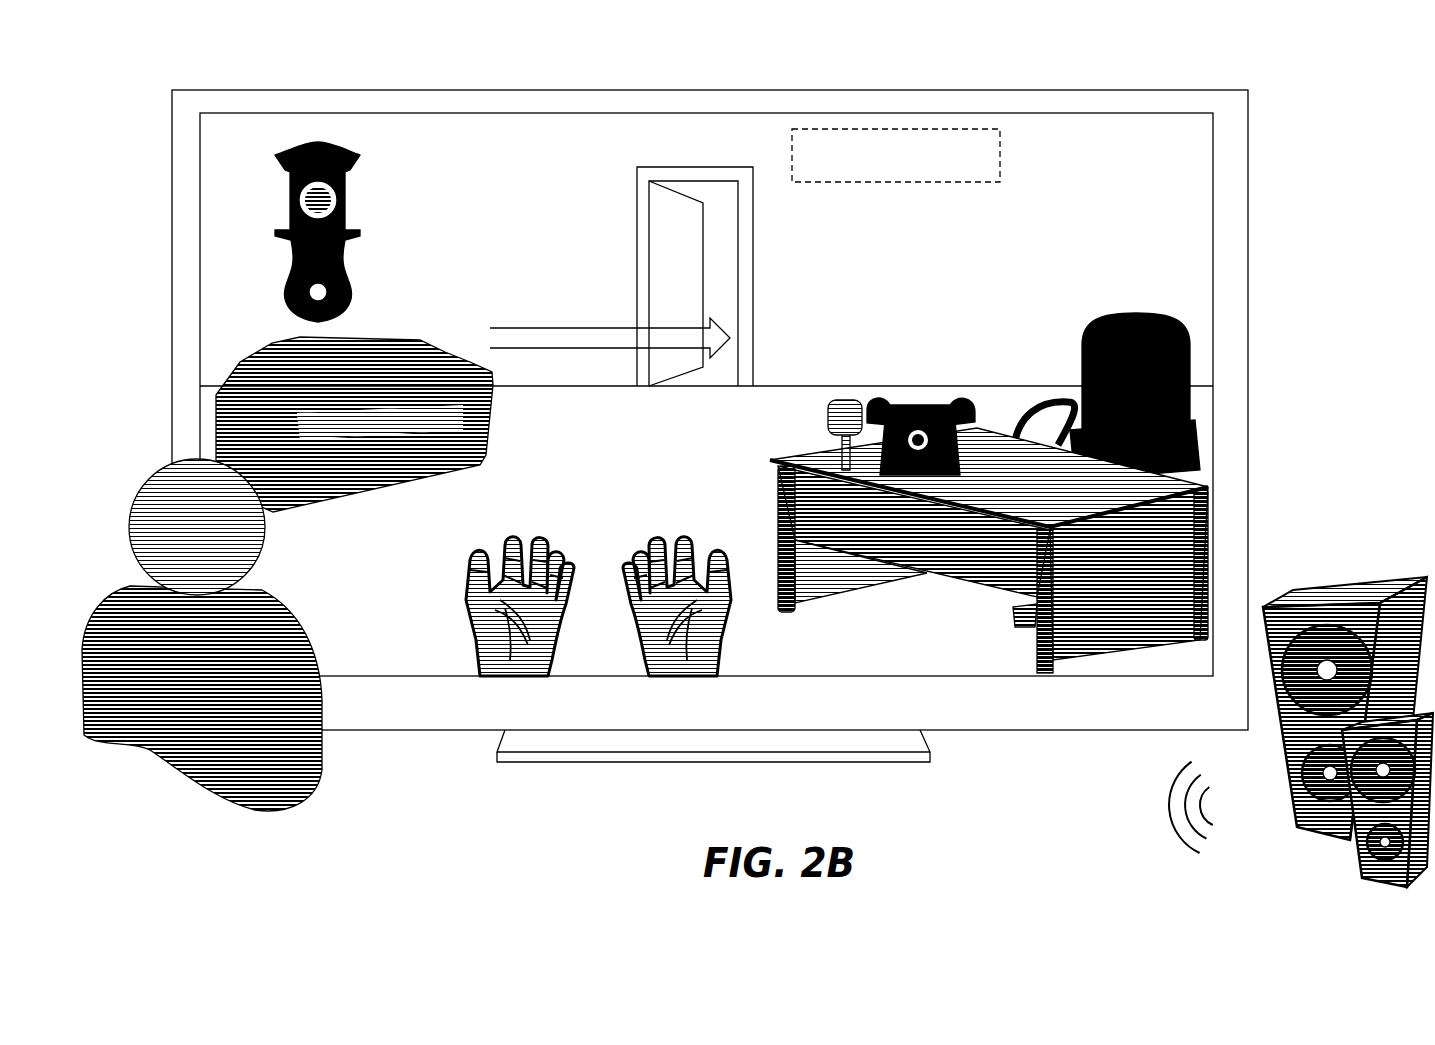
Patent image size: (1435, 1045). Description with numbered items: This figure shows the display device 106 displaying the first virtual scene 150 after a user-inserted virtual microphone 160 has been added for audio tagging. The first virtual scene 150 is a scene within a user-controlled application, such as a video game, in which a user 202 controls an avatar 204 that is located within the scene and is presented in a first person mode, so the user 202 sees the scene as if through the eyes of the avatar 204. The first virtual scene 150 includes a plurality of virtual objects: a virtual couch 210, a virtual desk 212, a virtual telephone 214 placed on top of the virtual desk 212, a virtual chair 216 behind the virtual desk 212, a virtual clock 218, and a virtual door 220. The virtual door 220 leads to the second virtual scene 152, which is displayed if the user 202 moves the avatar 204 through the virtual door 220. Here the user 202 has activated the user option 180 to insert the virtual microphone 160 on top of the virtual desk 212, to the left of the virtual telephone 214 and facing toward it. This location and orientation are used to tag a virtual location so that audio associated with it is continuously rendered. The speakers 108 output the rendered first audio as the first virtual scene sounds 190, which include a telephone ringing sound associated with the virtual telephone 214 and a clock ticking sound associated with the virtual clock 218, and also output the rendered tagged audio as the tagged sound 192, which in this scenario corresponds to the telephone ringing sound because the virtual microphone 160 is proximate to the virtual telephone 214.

The display device 106 is at (1248, 240).
The speakers 108 is at (1370, 582).
The first virtual scene 150 is at (706, 394).
The second virtual scene 152 is at (521, 326).
The virtual microphone 160 is at (830, 415).
The user option 180 is at (970, 166).
The first virtual scene sounds 190 is at (1167, 818).
The tagged sound 192 is at (1067, 807).
The user 202 is at (300, 800).
The avatar 204 is at (717, 633).
The virtual couch 210 is at (310, 503).
The virtual desk 212 is at (772, 488).
The virtual telephone 214 is at (917, 395).
The virtual chair 216 is at (1135, 313).
The virtual clock 218 is at (350, 198).
The virtual door 220 is at (753, 258).